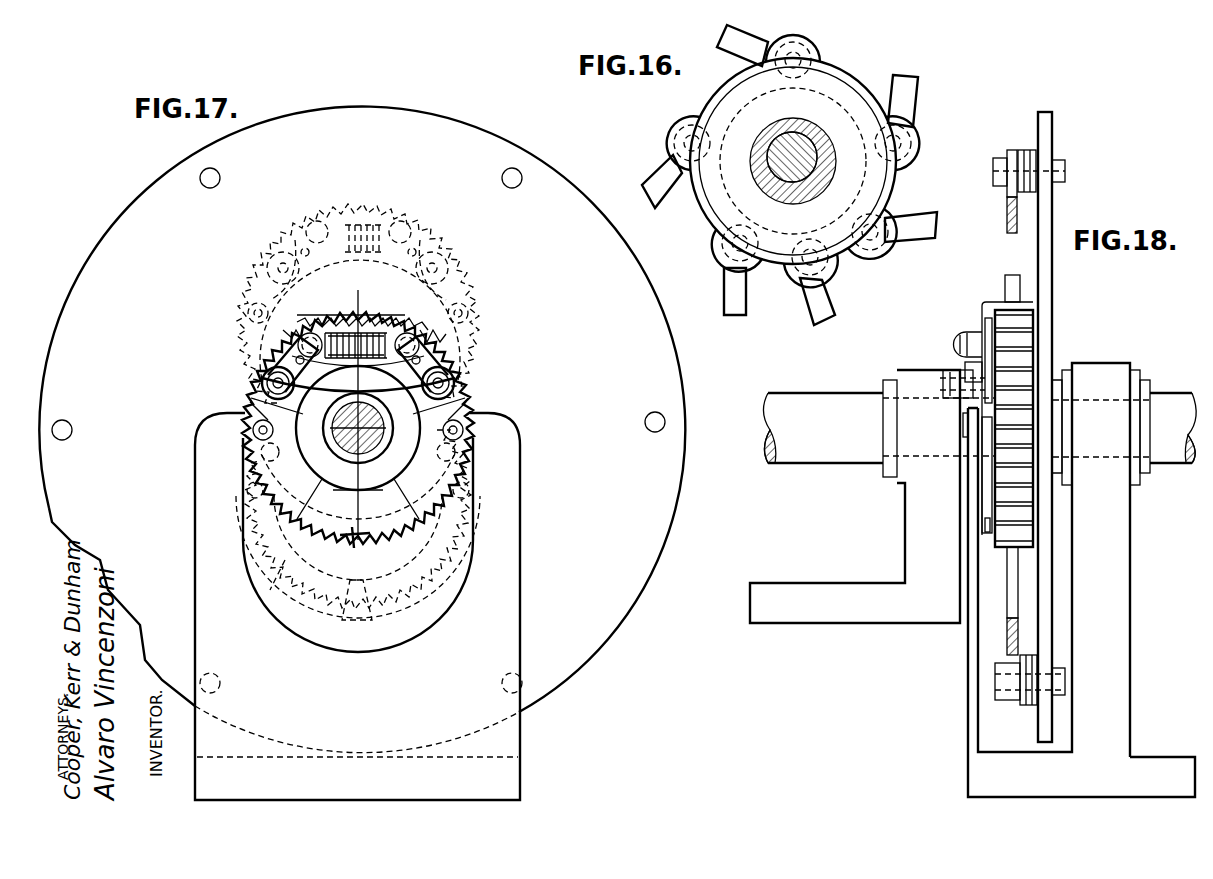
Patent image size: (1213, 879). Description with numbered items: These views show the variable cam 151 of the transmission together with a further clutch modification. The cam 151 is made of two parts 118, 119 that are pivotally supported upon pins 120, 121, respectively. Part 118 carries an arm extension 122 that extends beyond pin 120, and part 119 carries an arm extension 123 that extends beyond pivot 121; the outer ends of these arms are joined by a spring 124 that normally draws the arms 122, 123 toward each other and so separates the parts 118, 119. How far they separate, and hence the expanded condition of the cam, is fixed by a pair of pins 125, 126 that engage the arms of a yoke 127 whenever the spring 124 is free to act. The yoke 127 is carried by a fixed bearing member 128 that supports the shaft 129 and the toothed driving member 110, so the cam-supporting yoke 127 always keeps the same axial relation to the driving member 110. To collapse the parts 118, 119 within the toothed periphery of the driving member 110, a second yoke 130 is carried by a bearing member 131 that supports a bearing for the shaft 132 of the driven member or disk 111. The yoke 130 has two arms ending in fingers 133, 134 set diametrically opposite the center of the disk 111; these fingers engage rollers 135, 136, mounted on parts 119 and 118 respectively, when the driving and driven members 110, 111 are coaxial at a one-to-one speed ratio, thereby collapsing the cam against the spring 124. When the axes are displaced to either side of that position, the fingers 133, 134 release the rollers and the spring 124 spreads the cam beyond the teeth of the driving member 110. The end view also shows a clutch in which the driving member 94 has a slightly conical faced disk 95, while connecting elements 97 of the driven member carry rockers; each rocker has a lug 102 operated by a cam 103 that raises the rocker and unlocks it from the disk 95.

In FIG. 16, the driving member 94 is at (783, 183).
In FIG. 16, the conical faced disk 95 is at (735, 83).
In FIG. 16, the connecting elements 97 is at (755, 40).
In FIG. 16, the lug 102 is at (812, 63).
In FIG. 16, the cam 103 is at (847, 97).
In FIG. 17, the driving member 110 is at (427, 521).
In FIG. 18, the driving member 110 is at (1018, 358).
In FIG. 17, the driven member or disk 111 is at (654, 533).
In FIG. 18, the driven member or disk 111 is at (1046, 303).
In FIG. 17, the cam part 118 is at (408, 490).
In FIG. 18, the cam part 118 is at (988, 513).
In FIG. 17, the cam part 119 is at (297, 487).
In FIG. 18, the cam part 119 is at (990, 533).
In FIG. 17, the pin 120 is at (443, 382).
In FIG. 18, the pin 120 is at (945, 378).
In FIG. 17, the pin 121 is at (273, 383).
In FIG. 17, the arm extension 122 is at (450, 352).
In FIG. 18, the arm extension 122 is at (987, 337).
In FIG. 17, the arm extension 123 is at (272, 352).
In FIG. 17, the spring 124 is at (356, 357).
In FIG. 18, the spring 124 is at (963, 334).
In FIG. 17, the pin 125 is at (433, 353).
In FIG. 17, the pin 126 is at (292, 357).
In FIG. 17, the yoke 127 is at (403, 398).
In FIG. 18, the yoke 127 is at (968, 359).
In FIG. 18, the fixed bearing member 128 is at (917, 518).
In FIG. 17, the shaft 129 is at (337, 438).
In FIG. 18, the shaft 129 is at (818, 404).
In FIG. 17, the yoke 130 is at (506, 626).
In FIG. 18, the yoke 130 is at (970, 653).
In FIG. 18, the bearing member 131 is at (1118, 594).
In FIG. 18, the shaft 132 is at (1167, 402).
In FIG. 17, the finger 133 is at (463, 432).
In FIG. 17, the finger 134 is at (255, 432).
In FIG. 17, the roller 135 is at (465, 425).
In FIG. 18, the roller 135 is at (963, 432).
In FIG. 17, the roller 136 is at (256, 420).
In FIG. 17, the cam 151 is at (348, 533).